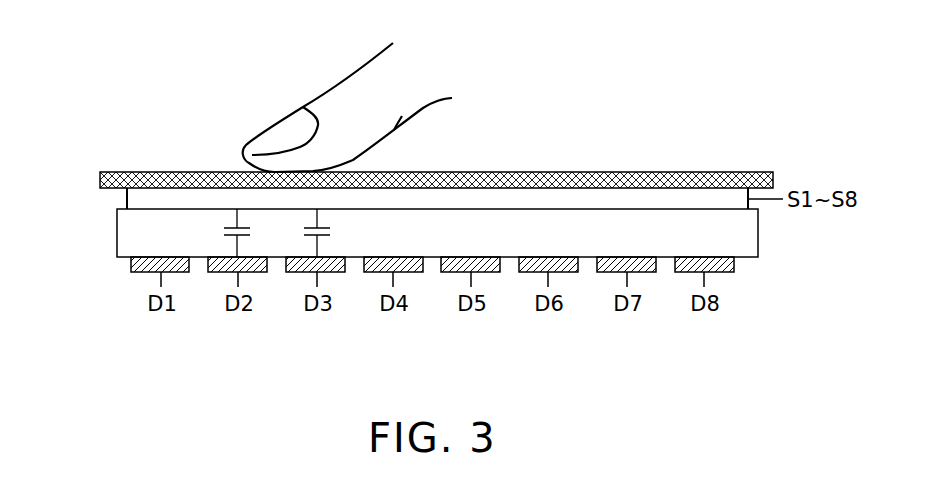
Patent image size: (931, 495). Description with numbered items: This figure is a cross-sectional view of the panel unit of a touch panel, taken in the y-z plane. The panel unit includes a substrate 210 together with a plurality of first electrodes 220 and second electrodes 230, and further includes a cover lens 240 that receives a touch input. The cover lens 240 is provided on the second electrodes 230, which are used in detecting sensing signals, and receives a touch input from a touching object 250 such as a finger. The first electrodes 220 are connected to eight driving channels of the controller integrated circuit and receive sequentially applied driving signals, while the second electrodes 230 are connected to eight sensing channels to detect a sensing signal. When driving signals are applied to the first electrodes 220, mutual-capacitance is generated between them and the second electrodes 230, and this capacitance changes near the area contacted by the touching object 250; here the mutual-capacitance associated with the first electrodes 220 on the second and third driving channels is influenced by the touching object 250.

The substrate 210 is at (125, 229).
The first electrodes 220 is at (131, 272).
The second electrodes 230 is at (135, 197).
The cover lens 240 is at (563, 171).
The touching object 250 is at (357, 90).